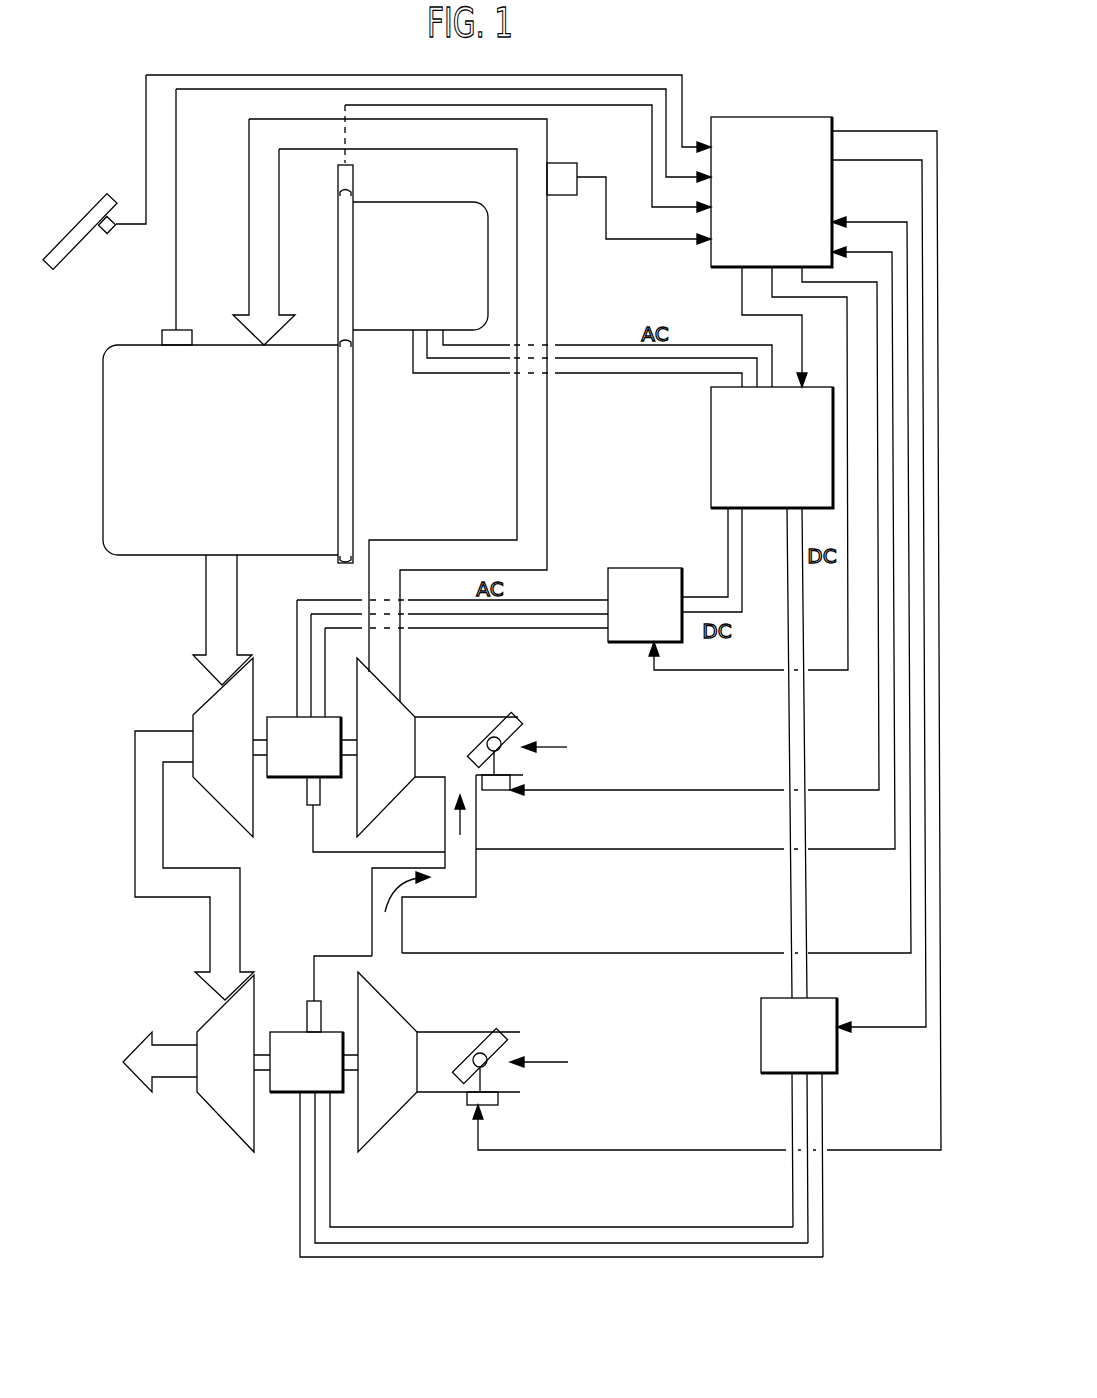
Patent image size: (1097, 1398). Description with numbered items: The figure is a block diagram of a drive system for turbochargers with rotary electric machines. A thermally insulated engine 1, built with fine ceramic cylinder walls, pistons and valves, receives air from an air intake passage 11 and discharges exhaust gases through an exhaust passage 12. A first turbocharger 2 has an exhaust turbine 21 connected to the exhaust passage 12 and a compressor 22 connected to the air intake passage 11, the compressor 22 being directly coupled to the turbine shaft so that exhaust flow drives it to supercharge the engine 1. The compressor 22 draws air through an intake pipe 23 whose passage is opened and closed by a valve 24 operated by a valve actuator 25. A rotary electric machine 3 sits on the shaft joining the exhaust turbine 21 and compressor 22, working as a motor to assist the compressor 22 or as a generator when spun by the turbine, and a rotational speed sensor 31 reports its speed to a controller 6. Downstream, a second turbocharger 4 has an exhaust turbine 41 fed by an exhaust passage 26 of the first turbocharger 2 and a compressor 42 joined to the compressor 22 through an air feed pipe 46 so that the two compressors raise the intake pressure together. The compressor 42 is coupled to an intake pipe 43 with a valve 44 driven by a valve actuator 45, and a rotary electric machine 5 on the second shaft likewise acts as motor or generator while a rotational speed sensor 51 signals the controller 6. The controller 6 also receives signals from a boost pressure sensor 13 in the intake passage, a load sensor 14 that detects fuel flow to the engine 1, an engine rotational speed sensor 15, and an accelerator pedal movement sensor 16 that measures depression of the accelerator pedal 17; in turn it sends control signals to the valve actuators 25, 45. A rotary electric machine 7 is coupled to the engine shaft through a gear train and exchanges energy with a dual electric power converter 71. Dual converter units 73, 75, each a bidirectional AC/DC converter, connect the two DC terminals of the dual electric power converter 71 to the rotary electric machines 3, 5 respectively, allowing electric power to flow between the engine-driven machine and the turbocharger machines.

The engine 1 is at (155, 543).
The first turbocharger 2 is at (291, 717).
The rotary electric machine 3 is at (296, 750).
The second turbocharger 4 is at (277, 1075).
The rotary electric machine 5 is at (293, 1086).
The controller 6 is at (740, 128).
The rotary electric machine 7 is at (443, 223).
The air intake passage 11 is at (477, 548).
The exhaust passage 12 is at (220, 627).
The boost pressure sensor 13 is at (556, 188).
The load sensor 14 is at (167, 335).
The engine rotational speed sensor 15 is at (356, 178).
The accelerator pedal movement sensor 16 is at (107, 233).
The accelerator pedal 17 is at (85, 213).
The exhaust turbine 21 is at (218, 719).
The compressor 22 is at (385, 773).
The intake pipe 23 is at (438, 717).
The valve 24 is at (517, 735).
The valve actuator 25 is at (484, 793).
The exhaust passage 26 is at (153, 890).
The rotational speed sensor 31 is at (307, 810).
The exhaust turbine 41 is at (235, 1098).
The compressor 42 is at (395, 1110).
The intake pipe 43 is at (443, 1030).
The valve 44 is at (510, 1045).
The valve actuator 45 is at (498, 1102).
The air feed pipe 46 is at (470, 875).
The rotational speed sensor 51 is at (312, 1014).
The dual electric power converter 71 is at (722, 413).
The dual converter unit 73 is at (650, 580).
The dual converter unit 75 is at (760, 1025).